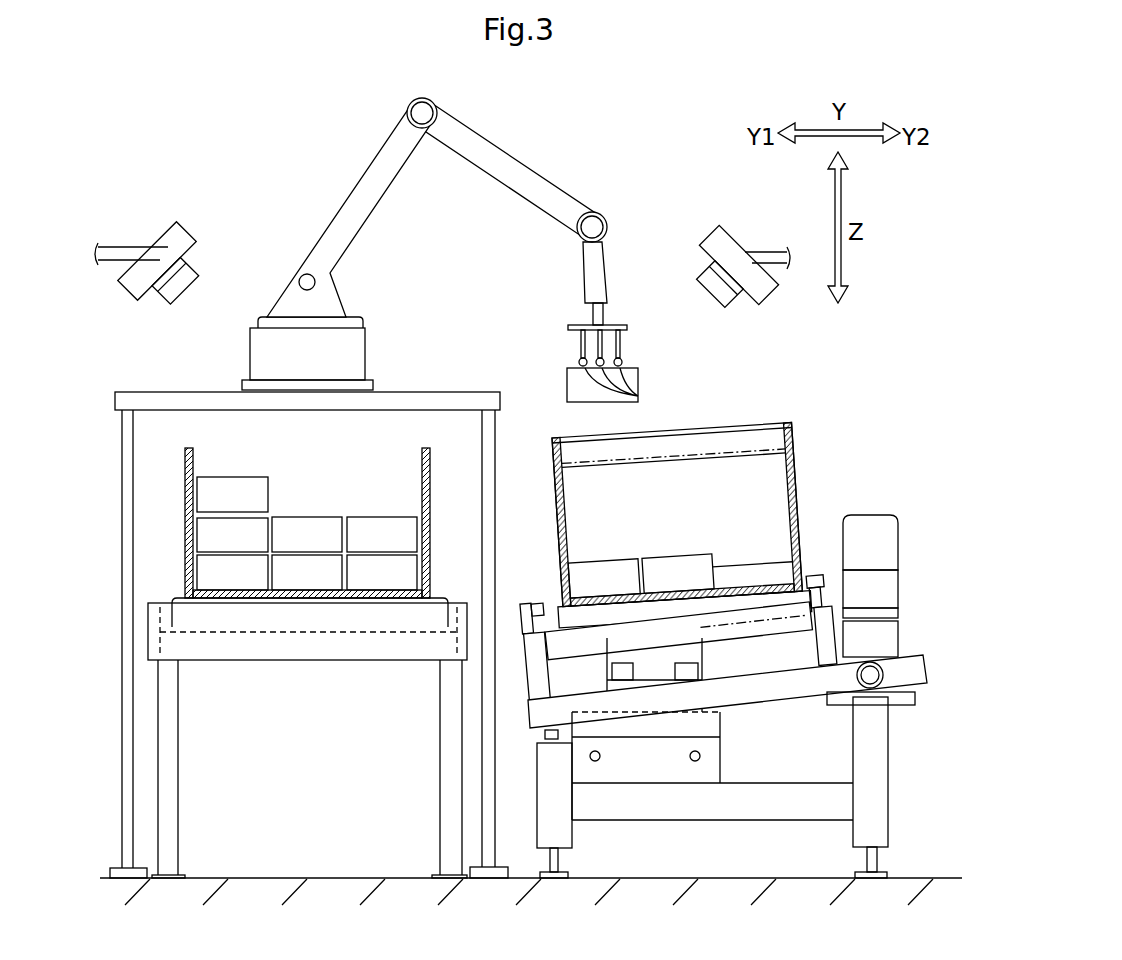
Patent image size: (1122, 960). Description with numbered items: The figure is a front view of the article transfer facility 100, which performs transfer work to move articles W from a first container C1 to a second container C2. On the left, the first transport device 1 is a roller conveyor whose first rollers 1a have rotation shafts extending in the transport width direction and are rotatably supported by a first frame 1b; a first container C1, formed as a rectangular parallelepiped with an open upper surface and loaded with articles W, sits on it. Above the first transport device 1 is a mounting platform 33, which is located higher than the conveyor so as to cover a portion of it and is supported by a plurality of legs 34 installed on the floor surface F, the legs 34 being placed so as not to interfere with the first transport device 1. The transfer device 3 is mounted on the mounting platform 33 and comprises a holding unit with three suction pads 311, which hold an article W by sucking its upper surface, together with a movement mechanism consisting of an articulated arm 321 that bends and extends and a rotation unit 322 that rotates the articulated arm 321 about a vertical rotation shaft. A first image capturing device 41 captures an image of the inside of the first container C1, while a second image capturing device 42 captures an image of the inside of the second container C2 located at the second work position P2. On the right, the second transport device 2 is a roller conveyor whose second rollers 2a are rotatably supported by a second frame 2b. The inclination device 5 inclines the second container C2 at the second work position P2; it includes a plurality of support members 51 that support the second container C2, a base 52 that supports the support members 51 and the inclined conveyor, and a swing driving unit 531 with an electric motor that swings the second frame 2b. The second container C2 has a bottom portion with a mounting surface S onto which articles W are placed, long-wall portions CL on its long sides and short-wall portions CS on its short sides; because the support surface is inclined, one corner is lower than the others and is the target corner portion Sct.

The article transfer facility 100 is at (182, 96).
The transfer device 3 is at (479, 253).
The articulated arm 321 is at (355, 198).
The rotation unit 322 is at (352, 322).
The suction pads 311 is at (638, 395).
The mounting platform 33 is at (203, 394).
The legs 34 is at (125, 753).
The first image capturing device 41 is at (168, 242).
The second image capturing device 42 is at (732, 253).
The first transport device 1 is at (313, 717).
The first rollers 1a is at (434, 597).
The first frame 1b is at (257, 650).
The first container C1 is at (185, 492).
The articles W is at (372, 522).
The floor surface F is at (307, 877).
The inclination device 5 is at (730, 609).
The second container C2 is at (673, 483).
The long-wall portions CL is at (738, 440).
The short-wall portions CS is at (558, 513).
The mounting surface S is at (742, 583).
The target corner portion Sct is at (562, 575).
The support members 51 is at (583, 620).
The swing driving unit 531 is at (868, 525).
The second work position P2 is at (828, 443).
The second transport device 2 is at (715, 650).
The second rollers 2a is at (553, 645).
The second frame 2b is at (732, 688).
The base 52 is at (903, 764).